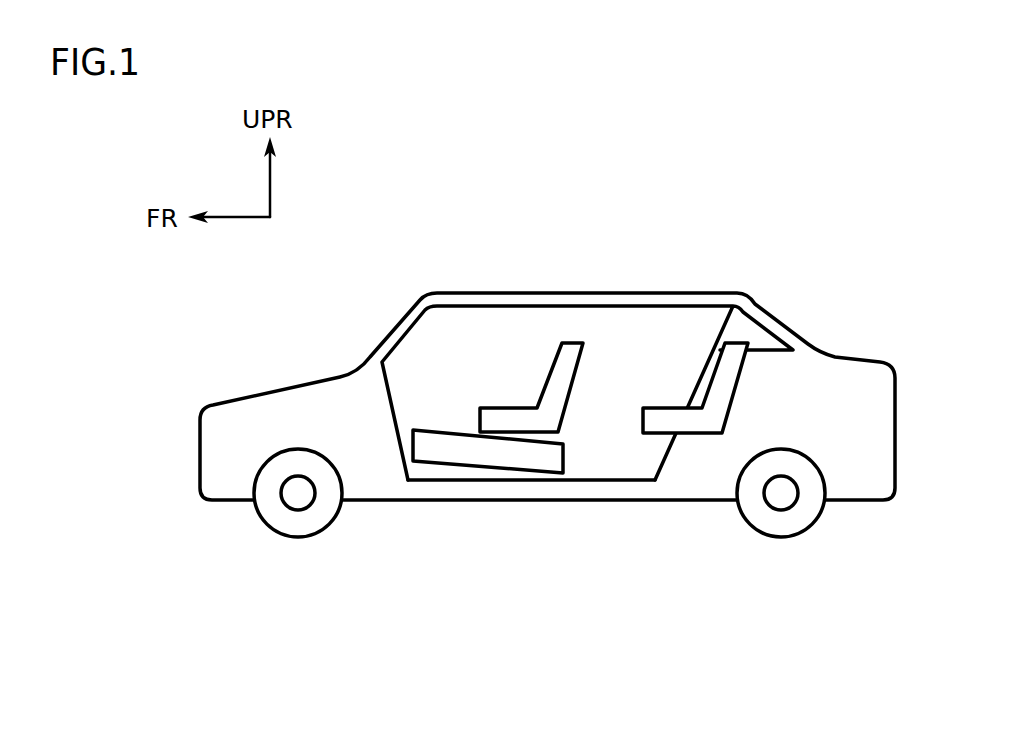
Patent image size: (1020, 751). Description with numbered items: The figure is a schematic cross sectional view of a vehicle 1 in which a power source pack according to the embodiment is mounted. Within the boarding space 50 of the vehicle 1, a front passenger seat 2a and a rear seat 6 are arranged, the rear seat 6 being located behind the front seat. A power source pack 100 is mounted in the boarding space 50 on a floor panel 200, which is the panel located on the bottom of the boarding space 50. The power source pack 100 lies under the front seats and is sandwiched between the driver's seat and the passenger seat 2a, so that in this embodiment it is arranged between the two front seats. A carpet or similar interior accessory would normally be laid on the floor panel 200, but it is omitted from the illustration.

The vehicle 1 is at (293, 313).
The passenger seat 2a is at (517, 420).
The rear seat 6 is at (678, 405).
The boarding space 50 is at (628, 338).
The power source pack 100 is at (520, 457).
The floor panel 200 is at (447, 478).